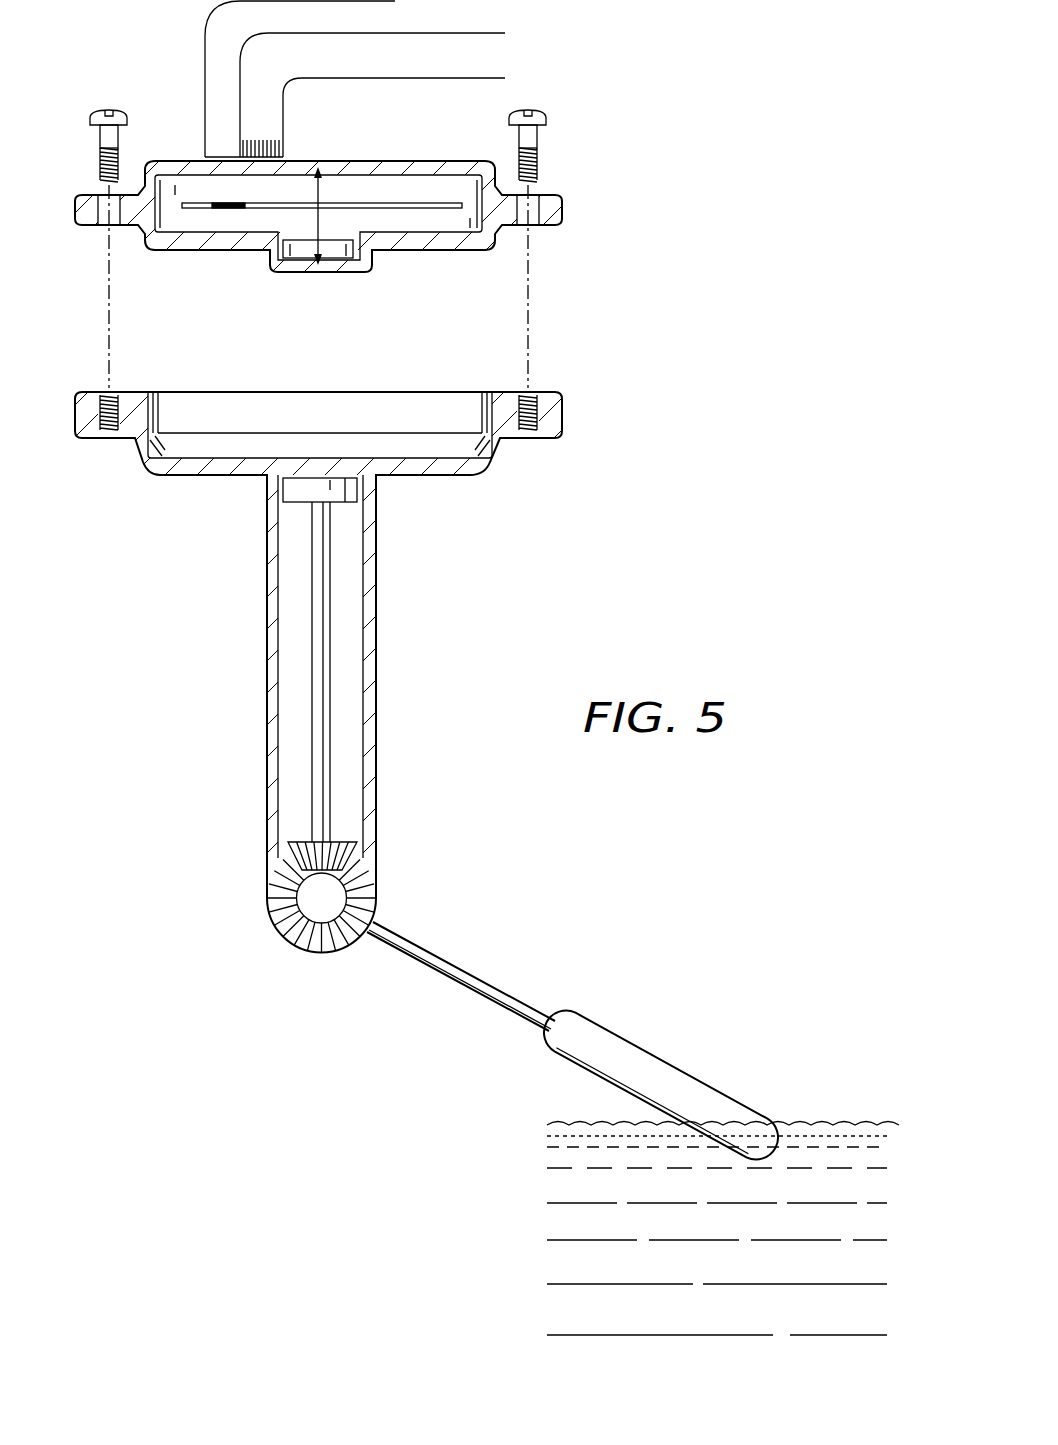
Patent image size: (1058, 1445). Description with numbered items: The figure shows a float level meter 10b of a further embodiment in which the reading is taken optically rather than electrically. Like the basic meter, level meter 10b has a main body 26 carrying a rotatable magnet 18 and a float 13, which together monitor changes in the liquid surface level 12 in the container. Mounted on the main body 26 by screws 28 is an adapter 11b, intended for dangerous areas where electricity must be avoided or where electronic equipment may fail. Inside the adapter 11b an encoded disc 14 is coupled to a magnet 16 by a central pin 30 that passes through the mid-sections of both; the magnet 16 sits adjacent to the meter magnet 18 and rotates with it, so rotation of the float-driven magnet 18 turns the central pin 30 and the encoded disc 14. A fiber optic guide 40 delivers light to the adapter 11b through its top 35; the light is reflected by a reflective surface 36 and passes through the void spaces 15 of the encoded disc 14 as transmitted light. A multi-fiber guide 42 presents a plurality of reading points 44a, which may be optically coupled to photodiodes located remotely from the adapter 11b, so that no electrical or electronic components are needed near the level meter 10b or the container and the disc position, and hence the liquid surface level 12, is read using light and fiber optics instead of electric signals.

The level meter 10b is at (487, 797).
The adapter 11b is at (317, 249).
The liquid surface level 12 is at (655, 1195).
The float 13 is at (673, 1073).
The encoded disc 14 is at (421, 208).
The void spaces 15 is at (237, 208).
The magnet 16 is at (335, 253).
The magnet 18 is at (290, 488).
The main body 26 is at (241, 690).
The screws 28 is at (95, 133).
The central pin 30 is at (318, 197).
The top 35 is at (420, 162).
The reflective surface 36 is at (203, 221).
The fiber optic guide 40 is at (208, 118).
The multi-fiber guide 42 is at (278, 118).
The reading points 44a is at (256, 124).